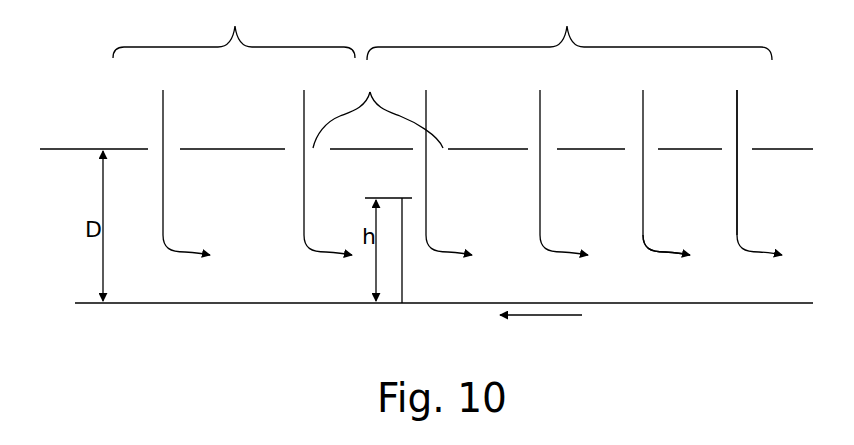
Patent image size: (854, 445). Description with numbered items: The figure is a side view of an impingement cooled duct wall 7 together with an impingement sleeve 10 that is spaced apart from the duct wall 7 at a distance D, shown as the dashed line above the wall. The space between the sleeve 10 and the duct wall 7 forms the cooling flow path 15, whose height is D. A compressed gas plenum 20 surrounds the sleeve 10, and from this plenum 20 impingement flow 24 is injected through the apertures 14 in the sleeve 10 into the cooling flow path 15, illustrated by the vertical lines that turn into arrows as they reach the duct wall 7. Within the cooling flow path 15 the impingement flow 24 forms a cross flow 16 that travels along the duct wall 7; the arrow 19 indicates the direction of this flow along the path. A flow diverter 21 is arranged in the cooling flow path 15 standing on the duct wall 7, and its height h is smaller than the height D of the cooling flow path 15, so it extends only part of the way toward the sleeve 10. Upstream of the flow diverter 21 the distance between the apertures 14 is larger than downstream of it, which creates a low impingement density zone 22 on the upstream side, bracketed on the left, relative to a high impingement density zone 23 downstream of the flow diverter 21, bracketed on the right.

The duct wall 7 is at (260, 303).
The impingement sleeve 10 is at (258, 148).
The apertures 14 is at (378, 108).
The cooling flow path 15 is at (685, 205).
The cross flow 16 is at (675, 253).
The flow direction 19 is at (541, 331).
The compressed gas plenum 20 is at (378, 25).
The flow diverter 21 is at (402, 275).
The low impingement density zone 22 is at (235, 28).
The high impingement density zone 23 is at (567, 28).
The impingement flow 24 is at (645, 128).